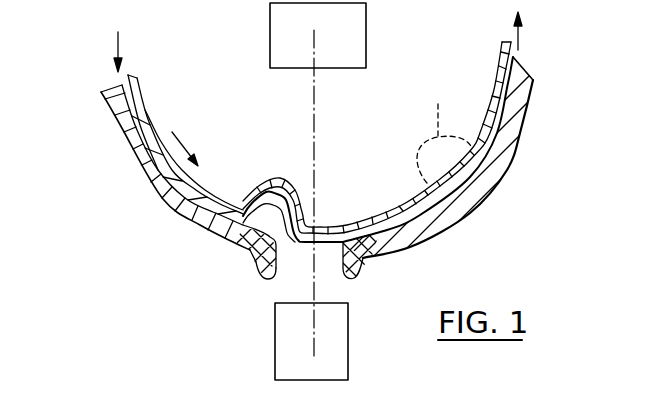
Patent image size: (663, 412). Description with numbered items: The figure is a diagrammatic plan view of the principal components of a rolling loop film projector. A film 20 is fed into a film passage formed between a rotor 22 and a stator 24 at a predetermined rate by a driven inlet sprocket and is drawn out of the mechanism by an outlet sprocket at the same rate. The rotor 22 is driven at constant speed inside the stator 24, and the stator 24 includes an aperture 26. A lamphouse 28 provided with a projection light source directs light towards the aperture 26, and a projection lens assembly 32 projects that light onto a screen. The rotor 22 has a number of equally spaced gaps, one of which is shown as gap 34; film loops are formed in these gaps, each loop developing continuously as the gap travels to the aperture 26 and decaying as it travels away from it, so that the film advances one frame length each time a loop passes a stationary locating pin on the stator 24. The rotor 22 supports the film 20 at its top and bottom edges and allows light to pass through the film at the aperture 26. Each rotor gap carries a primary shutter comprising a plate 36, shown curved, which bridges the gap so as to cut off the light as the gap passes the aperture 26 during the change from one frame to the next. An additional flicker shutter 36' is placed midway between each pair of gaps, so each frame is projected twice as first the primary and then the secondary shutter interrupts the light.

The film 20 is at (134, 116).
The rotor 22 is at (242, 215).
The stator 24 is at (183, 219).
The aperture 26 is at (282, 280).
The lamphouse 28 is at (366, 56).
The projection lens assembly 32 is at (343, 323).
The gap 34 is at (236, 247).
The plate 36 is at (377, 142).
The flicker shutter 36' is at (444, 131).